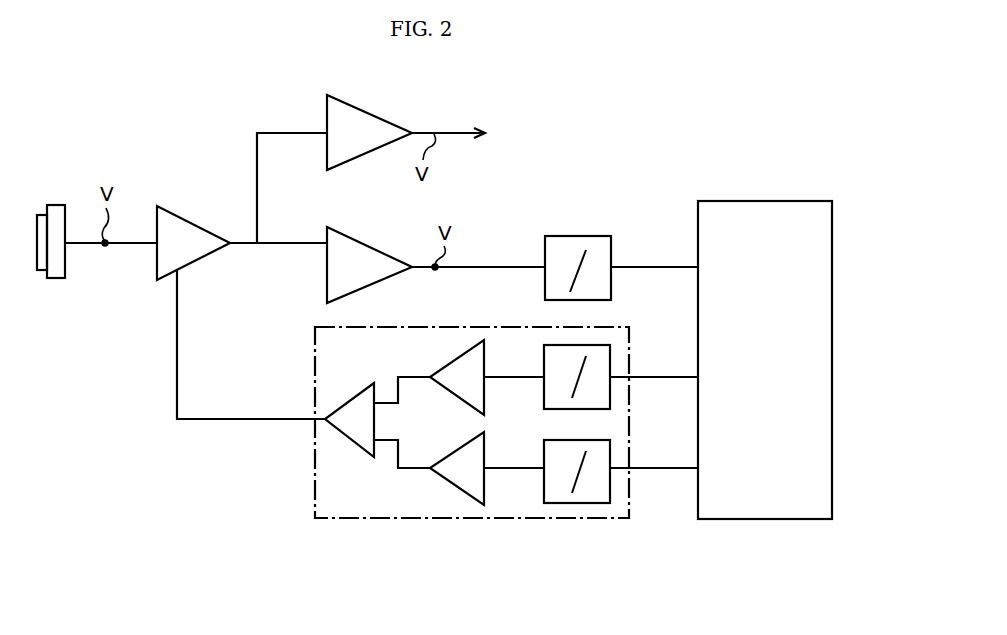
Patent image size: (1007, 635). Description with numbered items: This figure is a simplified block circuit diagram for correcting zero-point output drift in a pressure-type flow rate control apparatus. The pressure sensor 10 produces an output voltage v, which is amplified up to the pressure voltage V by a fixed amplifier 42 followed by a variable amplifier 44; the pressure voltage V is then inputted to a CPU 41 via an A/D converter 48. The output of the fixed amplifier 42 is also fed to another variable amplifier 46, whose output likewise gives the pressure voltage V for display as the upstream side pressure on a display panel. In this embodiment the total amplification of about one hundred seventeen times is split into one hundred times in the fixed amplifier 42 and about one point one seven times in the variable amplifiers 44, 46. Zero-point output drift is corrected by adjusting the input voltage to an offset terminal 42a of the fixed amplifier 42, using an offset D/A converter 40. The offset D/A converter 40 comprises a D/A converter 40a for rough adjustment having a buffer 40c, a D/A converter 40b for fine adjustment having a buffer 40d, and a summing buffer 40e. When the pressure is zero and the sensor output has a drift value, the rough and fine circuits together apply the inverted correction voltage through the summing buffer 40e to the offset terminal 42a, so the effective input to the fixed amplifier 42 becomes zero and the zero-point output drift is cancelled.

The pressure sensor 10 is at (57, 271).
The fixed amplifier 42 is at (157, 264).
The offset terminal 42a is at (181, 273).
The variable amplifier 44 is at (361, 244).
The variable amplifier 46 is at (378, 114).
The A/D converter 48 is at (584, 236).
The CPU 41 is at (759, 201).
The offset D/A converter 40 is at (601, 520).
The D/A converter for rough adjustment 40a is at (546, 393).
The D/A converter for fine adjustment 40b is at (540, 503).
The buffer 40c is at (446, 388).
The buffer 40d is at (458, 490).
The summing buffer 40e is at (353, 444).